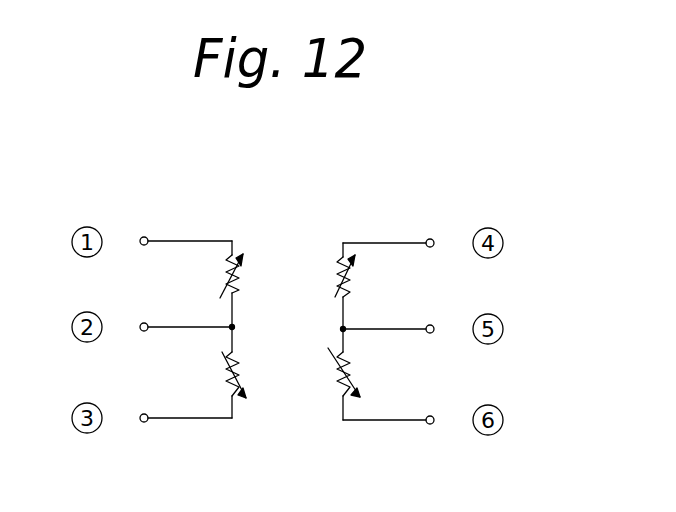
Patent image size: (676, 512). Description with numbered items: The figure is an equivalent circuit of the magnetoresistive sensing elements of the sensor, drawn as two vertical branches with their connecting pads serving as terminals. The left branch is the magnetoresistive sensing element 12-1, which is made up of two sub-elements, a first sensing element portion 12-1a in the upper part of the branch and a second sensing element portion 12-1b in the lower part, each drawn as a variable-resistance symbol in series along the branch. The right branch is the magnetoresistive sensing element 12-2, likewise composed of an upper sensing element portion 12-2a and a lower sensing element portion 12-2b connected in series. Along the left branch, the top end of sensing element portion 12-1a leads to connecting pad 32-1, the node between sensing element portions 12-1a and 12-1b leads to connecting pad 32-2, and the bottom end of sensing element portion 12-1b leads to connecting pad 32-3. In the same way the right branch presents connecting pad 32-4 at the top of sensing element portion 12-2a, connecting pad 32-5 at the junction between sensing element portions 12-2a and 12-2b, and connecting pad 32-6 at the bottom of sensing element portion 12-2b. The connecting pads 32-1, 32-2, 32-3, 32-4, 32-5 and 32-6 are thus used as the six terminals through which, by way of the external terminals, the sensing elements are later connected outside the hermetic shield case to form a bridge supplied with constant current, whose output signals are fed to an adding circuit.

The magnetoresistive sensing element 12-1 is at (234, 238).
The magnetoresistive sensing element 12-2 is at (339, 239).
The magnetoresistive sensing element portion 12-1a is at (236, 292).
The magnetoresistive sensing element portion 12-1b is at (237, 392).
The magnetoresistive sensing element portion 12-2a is at (339, 267).
The magnetoresistive sensing element portion 12-2b is at (340, 378).
The connecting pad 32-1 is at (144, 236).
The connecting pad 32-2 is at (144, 323).
The connecting pad 32-3 is at (144, 414).
The connecting pad 32-4 is at (430, 239).
The connecting pad 32-5 is at (430, 325).
The connecting pad 32-6 is at (430, 416).